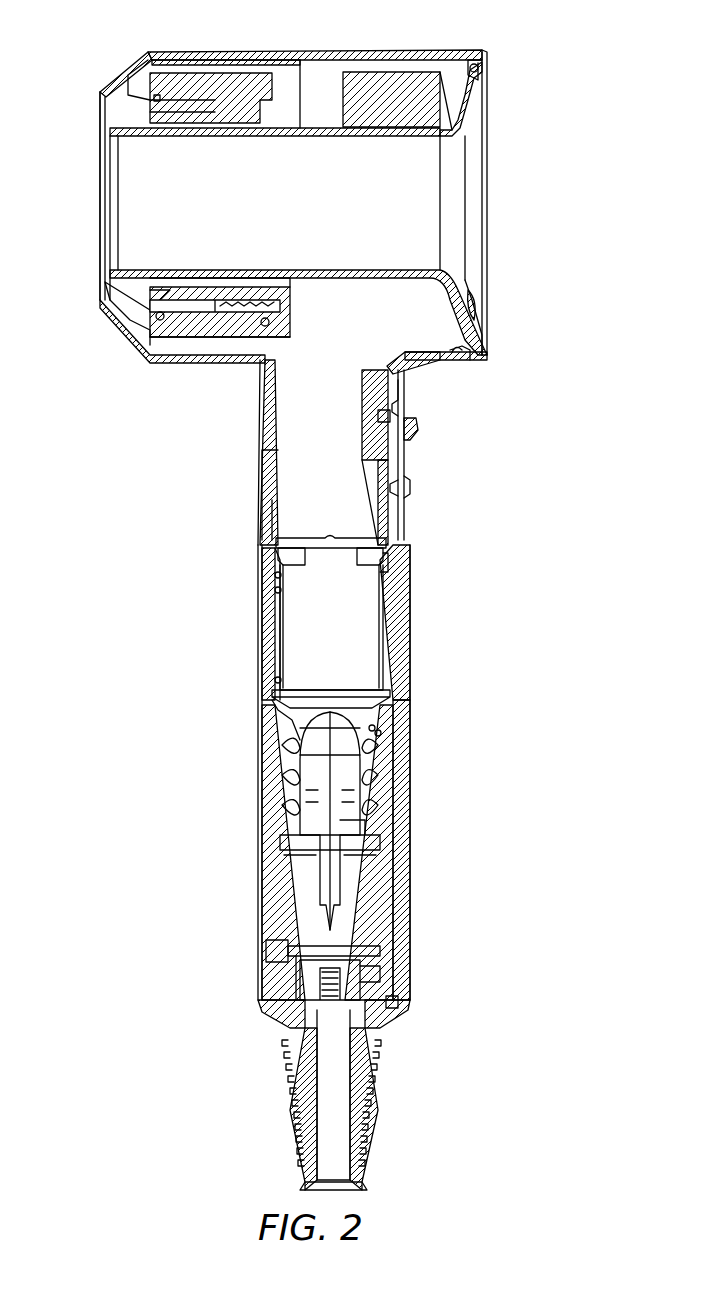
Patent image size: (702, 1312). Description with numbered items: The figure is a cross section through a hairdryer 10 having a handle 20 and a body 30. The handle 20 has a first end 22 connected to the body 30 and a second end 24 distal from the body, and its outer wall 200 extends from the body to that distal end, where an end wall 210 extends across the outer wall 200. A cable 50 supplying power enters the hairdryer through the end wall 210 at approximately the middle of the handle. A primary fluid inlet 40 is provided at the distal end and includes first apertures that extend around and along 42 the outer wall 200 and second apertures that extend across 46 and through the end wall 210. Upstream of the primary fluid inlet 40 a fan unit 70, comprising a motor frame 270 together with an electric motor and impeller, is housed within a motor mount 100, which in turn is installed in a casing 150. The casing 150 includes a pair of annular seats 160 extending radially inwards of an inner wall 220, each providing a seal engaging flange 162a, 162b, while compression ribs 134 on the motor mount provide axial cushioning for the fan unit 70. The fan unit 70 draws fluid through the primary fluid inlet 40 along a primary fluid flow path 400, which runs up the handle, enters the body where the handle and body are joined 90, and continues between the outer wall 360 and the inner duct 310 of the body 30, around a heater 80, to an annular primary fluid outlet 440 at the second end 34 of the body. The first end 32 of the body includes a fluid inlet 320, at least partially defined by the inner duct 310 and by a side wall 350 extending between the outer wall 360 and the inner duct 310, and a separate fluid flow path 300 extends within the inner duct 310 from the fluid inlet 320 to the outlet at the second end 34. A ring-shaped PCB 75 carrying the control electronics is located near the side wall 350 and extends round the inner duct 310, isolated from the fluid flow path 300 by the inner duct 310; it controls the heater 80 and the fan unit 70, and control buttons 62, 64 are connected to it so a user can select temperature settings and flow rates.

The hairdryer 10 is at (545, 548).
The handle 20 is at (432, 780).
The first end 22 is at (412, 362).
The second end 24 is at (422, 1028).
The body 30 is at (512, 56).
The first end 32 is at (482, 52).
The second end 34 is at (100, 92).
The primary fluid inlet 40 is at (264, 948).
The first apertures 42 is at (412, 938).
The second apertures 46 is at (400, 1016).
The cable 50 is at (374, 1094).
The control button 62 is at (418, 427).
The control button 64 is at (480, 300).
The fan unit 70 is at (344, 627).
The PCB 75 is at (378, 75).
The heater 80 is at (200, 72).
The junction 90 is at (262, 368).
The motor mount 100 is at (385, 696).
The compression ribs 134 is at (295, 546).
The casing 150 is at (400, 652).
The annular seats 160 is at (398, 560).
The seal engaging flange 162a is at (274, 560).
The seal engaging flange 162b is at (274, 702).
The outer wall 200 is at (412, 612).
The end wall 210 is at (270, 1012).
The inner wall 220 is at (270, 795).
The motor frame 270 is at (276, 612).
The fluid flow path 300 is at (302, 218).
The inner duct 310 is at (370, 136).
The fluid inlet 320 is at (487, 198).
The side wall 350 is at (476, 96).
The outer wall 360 is at (320, 52).
The primary fluid flow path 400 is at (343, 416).
The primary fluid outlet 440 is at (100, 306).